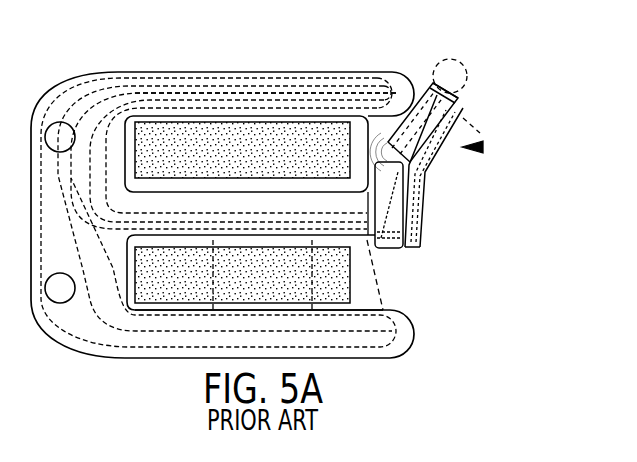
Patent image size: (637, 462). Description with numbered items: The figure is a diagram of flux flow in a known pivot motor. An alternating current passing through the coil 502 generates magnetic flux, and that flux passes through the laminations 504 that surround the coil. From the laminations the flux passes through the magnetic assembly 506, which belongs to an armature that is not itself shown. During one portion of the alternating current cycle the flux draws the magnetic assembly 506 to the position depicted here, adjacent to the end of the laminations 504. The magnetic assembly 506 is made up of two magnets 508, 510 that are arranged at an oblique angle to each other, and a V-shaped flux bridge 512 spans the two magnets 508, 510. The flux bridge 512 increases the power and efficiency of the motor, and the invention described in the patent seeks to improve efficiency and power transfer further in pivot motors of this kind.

The coil 502 is at (205, 152).
The laminations 504 is at (247, 72).
The magnetic assembly 506 is at (482, 147).
The magnet 508 is at (393, 207).
The magnet 510 is at (437, 103).
The V-shaped flux bridge 512 is at (417, 203).